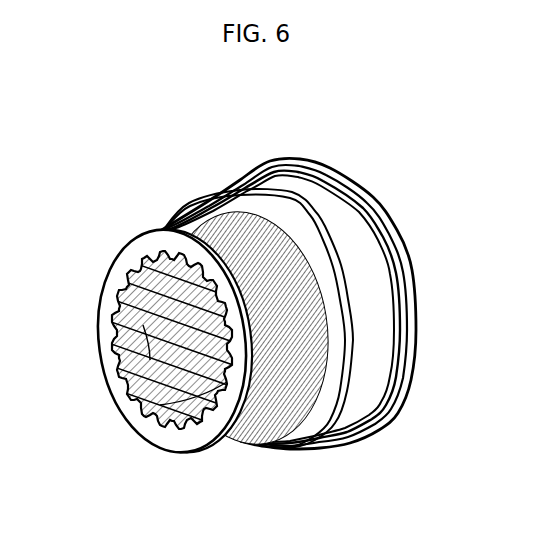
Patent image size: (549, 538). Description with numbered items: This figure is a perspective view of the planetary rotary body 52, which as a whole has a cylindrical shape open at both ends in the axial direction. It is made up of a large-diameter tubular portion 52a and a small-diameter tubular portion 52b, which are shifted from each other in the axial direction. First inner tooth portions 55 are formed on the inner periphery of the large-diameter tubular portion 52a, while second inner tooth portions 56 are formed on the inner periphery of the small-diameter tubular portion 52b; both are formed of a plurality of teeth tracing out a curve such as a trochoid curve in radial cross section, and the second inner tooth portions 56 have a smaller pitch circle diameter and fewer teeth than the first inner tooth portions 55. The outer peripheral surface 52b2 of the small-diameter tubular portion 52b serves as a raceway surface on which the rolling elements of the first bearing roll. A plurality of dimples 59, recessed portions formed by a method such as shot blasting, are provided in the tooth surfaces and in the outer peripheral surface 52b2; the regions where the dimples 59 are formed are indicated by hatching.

The planetary rotary body 52 is at (286, 315).
The large-diameter tubular portion 52a is at (373, 367).
The small-diameter tubular portion 52b is at (158, 424).
The outer peripheral surface 52b2 is at (297, 390).
The first inner tooth portions 55 is at (223, 322).
The second inner tooth portions 56 is at (145, 290).
The dimples 59 is at (233, 240).